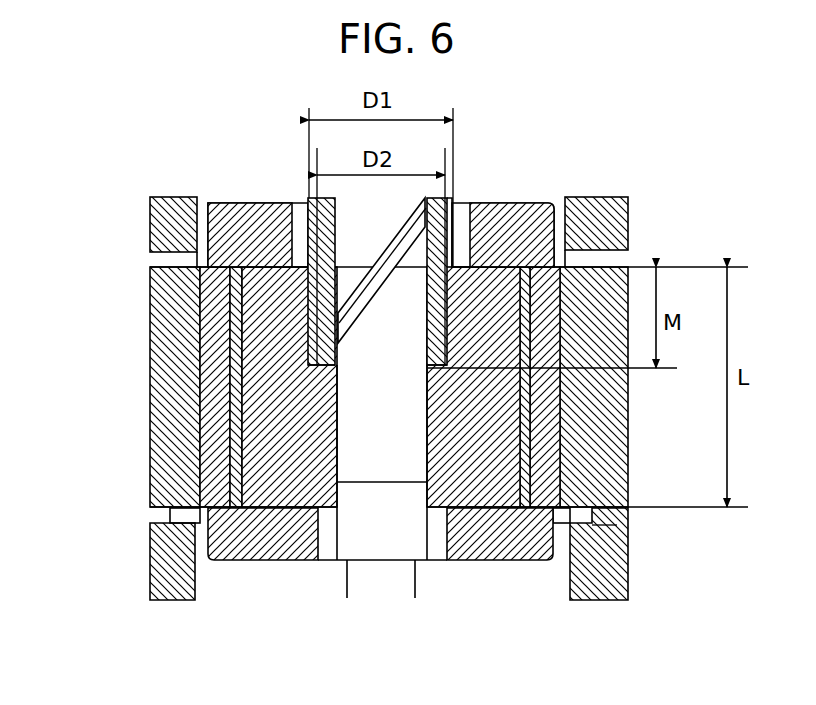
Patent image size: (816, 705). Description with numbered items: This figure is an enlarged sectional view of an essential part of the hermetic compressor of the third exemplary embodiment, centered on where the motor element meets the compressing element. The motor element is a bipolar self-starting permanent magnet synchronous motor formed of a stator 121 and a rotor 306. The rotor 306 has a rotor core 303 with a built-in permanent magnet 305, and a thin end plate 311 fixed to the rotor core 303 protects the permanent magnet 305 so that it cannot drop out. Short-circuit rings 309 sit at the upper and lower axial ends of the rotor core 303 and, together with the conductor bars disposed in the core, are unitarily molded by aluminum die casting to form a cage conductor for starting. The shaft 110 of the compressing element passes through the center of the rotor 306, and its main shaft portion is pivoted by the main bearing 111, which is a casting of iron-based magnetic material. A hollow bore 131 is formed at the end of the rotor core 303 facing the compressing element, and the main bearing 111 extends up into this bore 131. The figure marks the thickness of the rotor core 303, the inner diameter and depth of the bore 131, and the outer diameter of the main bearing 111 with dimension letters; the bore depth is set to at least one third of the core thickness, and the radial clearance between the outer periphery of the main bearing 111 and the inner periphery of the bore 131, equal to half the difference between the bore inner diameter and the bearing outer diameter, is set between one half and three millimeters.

The shaft 110 is at (385, 492).
The main bearing 111 is at (322, 295).
The stator 121 is at (187, 413).
The hollow bore 131 is at (313, 363).
The rotor core 303 is at (492, 490).
The permanent magnet 305 is at (232, 510).
The rotor 306 is at (212, 460).
The short-circuit ring 309 is at (477, 540).
The thin end plate 311 is at (323, 510).